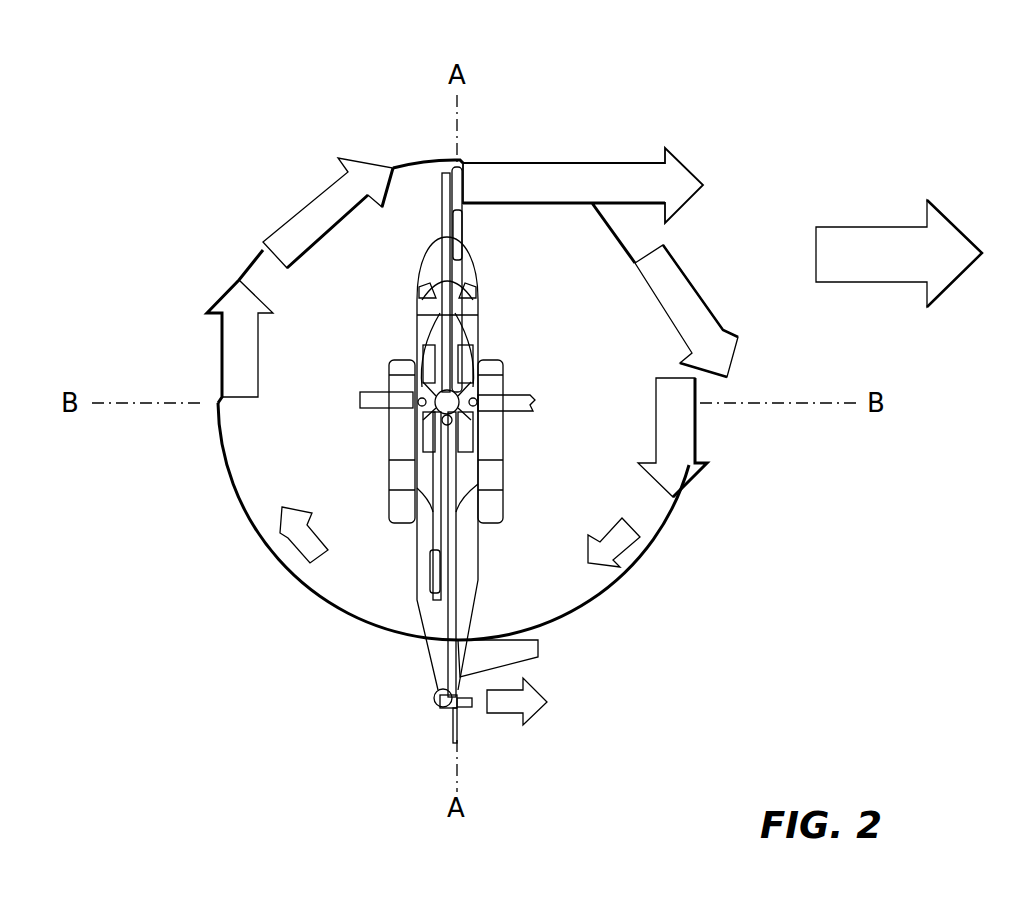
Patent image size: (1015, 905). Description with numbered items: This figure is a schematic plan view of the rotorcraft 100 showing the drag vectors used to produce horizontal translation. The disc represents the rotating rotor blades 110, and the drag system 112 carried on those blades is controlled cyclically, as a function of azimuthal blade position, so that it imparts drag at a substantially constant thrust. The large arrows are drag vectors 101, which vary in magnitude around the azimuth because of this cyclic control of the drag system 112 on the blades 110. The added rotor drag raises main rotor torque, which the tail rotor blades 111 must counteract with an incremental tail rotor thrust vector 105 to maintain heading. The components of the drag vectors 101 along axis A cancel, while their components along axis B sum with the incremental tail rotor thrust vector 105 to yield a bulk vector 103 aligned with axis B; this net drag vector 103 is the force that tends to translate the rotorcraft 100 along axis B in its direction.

The rotorcraft 100 is at (176, 206).
The drag vectors 101 is at (277, 231).
The bulk vector 103 is at (868, 248).
The incremental tail rotor thrust vector 105 is at (532, 722).
The rotor blades 110 is at (450, 333).
The tail rotor blades 111 is at (450, 725).
The drag system 112 is at (461, 233).